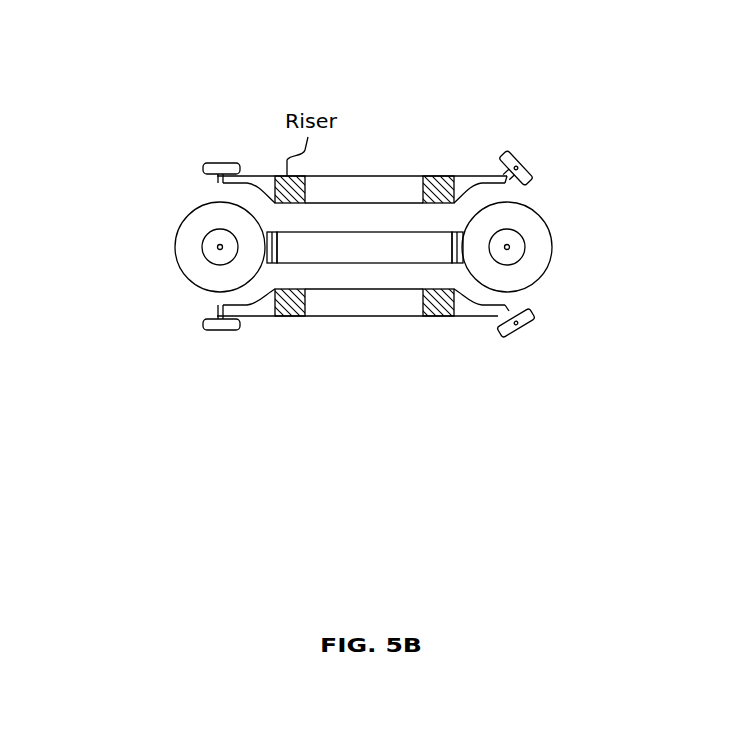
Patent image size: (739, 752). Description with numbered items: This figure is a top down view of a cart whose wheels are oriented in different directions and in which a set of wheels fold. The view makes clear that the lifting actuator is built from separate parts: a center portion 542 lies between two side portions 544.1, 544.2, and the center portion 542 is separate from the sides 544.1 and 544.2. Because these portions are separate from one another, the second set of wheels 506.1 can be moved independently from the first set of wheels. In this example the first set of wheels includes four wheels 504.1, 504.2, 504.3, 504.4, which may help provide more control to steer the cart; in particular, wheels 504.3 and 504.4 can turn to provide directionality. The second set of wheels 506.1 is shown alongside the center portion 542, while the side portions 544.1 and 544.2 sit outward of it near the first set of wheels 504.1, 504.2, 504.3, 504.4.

The wheel of first set of wheels 504.1 is at (217, 163).
The wheel of first set of wheels 504.2 is at (212, 332).
The wheel of first set of wheels 504.3 is at (501, 154).
The wheel of first set of wheels 504.4 is at (523, 335).
The second set of wheels 506.1 is at (635, 338).
The side portion of lifting actuator 544.1 is at (370, 176).
The side portion of lifting actuator 544.2 is at (322, 318).
The center portion of lifting actuator 542 is at (397, 263).